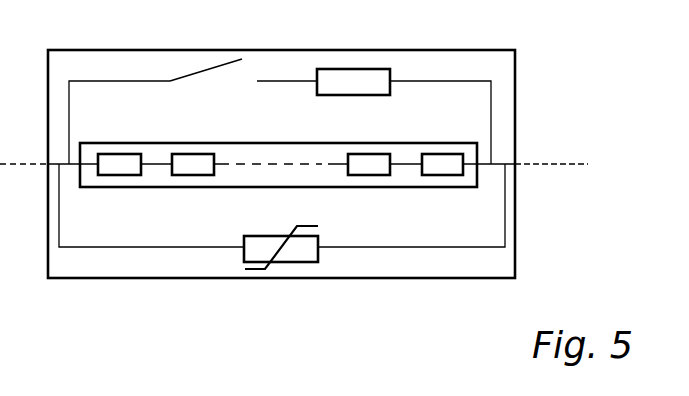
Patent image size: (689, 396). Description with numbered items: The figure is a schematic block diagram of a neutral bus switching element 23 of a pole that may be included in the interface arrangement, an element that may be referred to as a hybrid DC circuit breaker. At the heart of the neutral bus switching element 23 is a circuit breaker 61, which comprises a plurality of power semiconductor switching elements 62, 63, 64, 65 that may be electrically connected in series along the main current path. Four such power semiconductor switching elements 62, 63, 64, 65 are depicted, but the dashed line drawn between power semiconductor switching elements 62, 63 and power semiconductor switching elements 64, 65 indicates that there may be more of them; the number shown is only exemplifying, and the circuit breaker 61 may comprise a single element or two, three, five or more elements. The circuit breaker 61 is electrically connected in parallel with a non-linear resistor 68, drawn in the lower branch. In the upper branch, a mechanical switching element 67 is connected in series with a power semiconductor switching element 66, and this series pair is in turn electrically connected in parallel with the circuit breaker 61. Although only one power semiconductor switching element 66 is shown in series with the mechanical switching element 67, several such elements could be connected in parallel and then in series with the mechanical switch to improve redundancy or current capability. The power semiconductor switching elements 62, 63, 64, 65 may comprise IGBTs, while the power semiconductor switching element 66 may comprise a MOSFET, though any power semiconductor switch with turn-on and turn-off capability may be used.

The neutral bus switching element 23 is at (518, 78).
The circuit breaker 61 is at (157, 142).
The power semiconductor switching element 62 is at (118, 176).
The power semiconductor switching element 63 is at (190, 176).
The power semiconductor switching element 64 is at (364, 176).
The power semiconductor switching element 65 is at (438, 176).
The power semiconductor switching element 66 is at (390, 96).
The mechanical switching element 67 is at (211, 80).
The non-linear resistor 68 is at (300, 263).